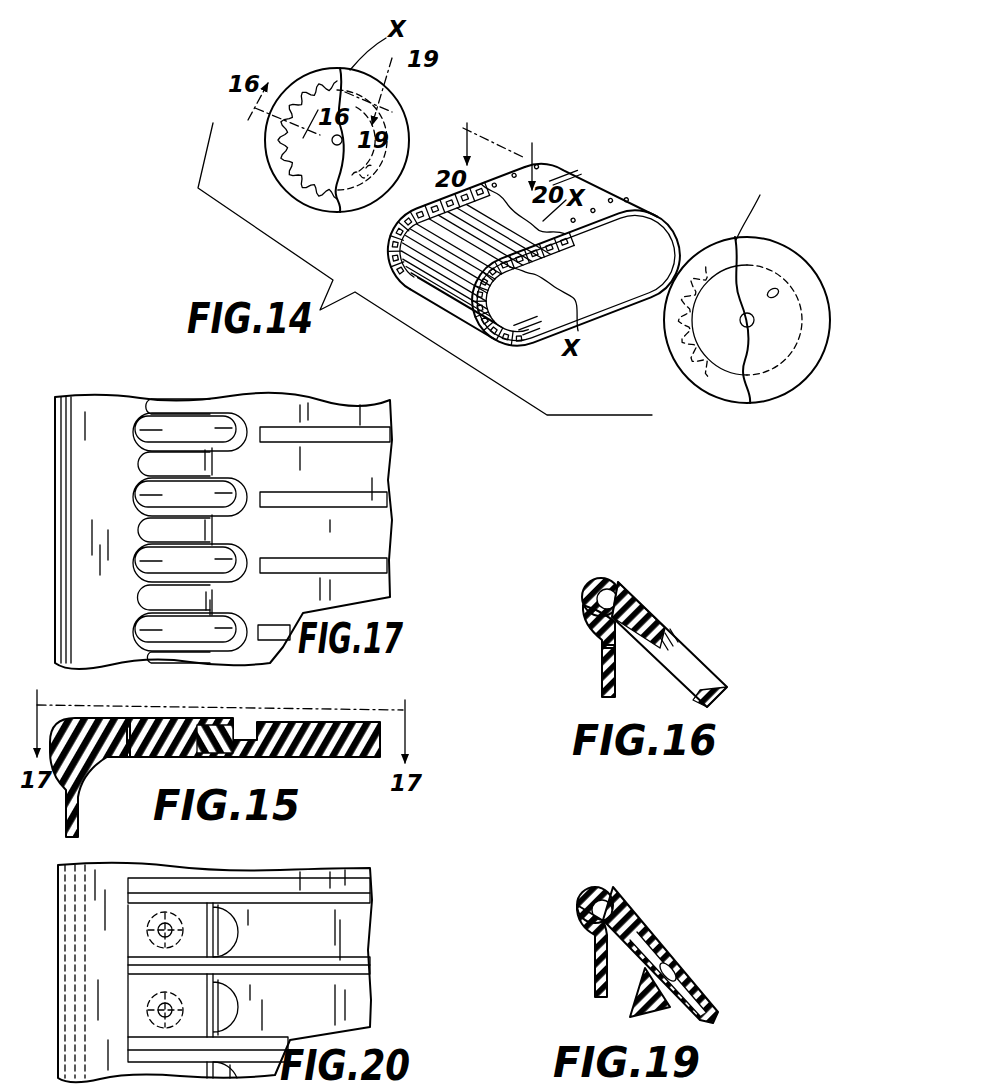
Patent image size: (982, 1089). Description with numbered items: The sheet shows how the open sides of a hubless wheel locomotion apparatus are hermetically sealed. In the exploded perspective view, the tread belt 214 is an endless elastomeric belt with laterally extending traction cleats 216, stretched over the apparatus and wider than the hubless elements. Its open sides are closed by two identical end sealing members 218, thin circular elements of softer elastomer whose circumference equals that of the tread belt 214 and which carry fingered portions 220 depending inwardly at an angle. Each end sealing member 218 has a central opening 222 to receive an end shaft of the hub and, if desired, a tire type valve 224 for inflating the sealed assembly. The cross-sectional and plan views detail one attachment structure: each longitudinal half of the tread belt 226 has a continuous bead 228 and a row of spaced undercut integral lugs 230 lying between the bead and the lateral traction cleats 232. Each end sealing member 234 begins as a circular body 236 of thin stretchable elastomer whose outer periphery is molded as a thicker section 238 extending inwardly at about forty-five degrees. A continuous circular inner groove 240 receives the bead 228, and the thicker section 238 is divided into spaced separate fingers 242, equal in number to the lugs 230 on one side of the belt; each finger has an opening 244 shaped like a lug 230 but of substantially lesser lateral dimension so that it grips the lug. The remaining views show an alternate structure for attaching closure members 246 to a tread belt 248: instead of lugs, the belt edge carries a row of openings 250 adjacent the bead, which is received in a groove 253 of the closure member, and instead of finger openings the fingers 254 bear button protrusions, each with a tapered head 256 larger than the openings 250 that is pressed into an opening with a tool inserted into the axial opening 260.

In FIG. 14, the tread belt 214 is at (491, 270).
In FIG. 14, the traction cleats 216 is at (393, 257).
In FIG. 14, the end sealing members 218 is at (318, 63).
In FIG. 14, the fingered portions 220 is at (395, 142).
In FIG. 14, the central opening 222 is at (333, 143).
In FIG. 14, the tire type valve 224 is at (778, 292).
In FIG. 17, the tread belt 226 is at (375, 528).
In FIG. 15, the tread belt 226 is at (306, 758).
In FIG. 15, the continuous bead 228 is at (93, 747).
In FIG. 17, the undercut integral lugs 230 is at (168, 497).
In FIG. 15, the undercut integral lugs 230 is at (192, 717).
In FIG. 17, the lateral traction cleats 232 is at (357, 500).
In FIG. 15, the end sealing members 234 is at (60, 778).
In FIG. 16, the end sealing members 234 is at (587, 586).
In FIG. 15, the circular body 236 is at (67, 812).
In FIG. 16, the circular body 236 is at (603, 663).
In FIG. 17, the thicker section 238 is at (145, 378).
In FIG. 15, the thicker section 238 is at (110, 718).
In FIG. 16, the thicker section 238 is at (688, 624).
In FIG. 16, the continuous circular inner groove 240 is at (616, 585).
In FIG. 17, the fingers 242 is at (247, 455).
In FIG. 15, the fingers 242 is at (240, 722).
In FIG. 16, the fingers 242 is at (726, 644).
In FIG. 17, the opening 244 is at (163, 420).
In FIG. 15, the opening 244 is at (197, 747).
In FIG. 16, the opening 244 is at (703, 670).
In FIG. 19, the closure members 246 is at (674, 936).
In FIG. 20, the tread belt 248 is at (340, 880).
In FIG. 20, the openings 250 is at (208, 922).
In FIG. 19, the groove 253 is at (604, 898).
In FIG. 19, the fingers 254 is at (717, 1013).
In FIG. 20, the fingers 254 is at (238, 940).
In FIG. 19, the tapered head 256 is at (627, 1010).
In FIG. 19, the axial opening 260 is at (668, 975).
In FIG. 20, the axial opening 260 is at (147, 930).